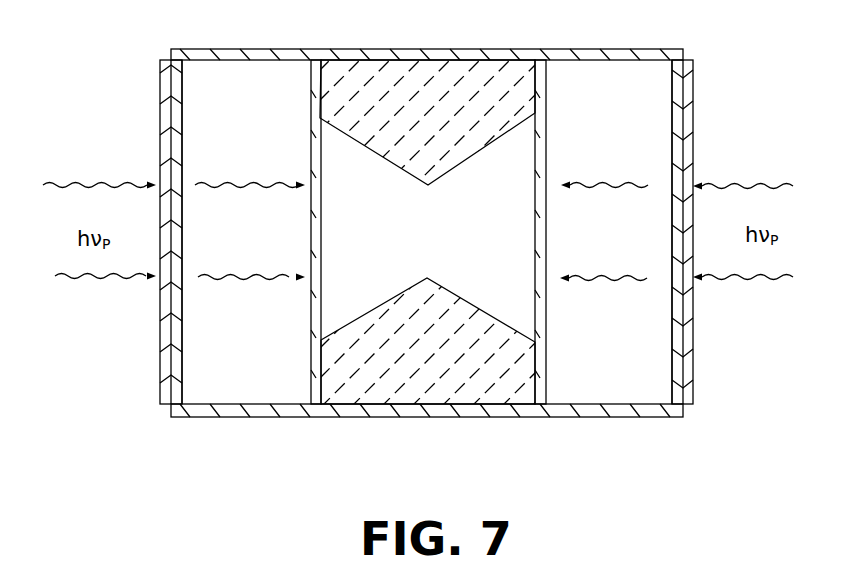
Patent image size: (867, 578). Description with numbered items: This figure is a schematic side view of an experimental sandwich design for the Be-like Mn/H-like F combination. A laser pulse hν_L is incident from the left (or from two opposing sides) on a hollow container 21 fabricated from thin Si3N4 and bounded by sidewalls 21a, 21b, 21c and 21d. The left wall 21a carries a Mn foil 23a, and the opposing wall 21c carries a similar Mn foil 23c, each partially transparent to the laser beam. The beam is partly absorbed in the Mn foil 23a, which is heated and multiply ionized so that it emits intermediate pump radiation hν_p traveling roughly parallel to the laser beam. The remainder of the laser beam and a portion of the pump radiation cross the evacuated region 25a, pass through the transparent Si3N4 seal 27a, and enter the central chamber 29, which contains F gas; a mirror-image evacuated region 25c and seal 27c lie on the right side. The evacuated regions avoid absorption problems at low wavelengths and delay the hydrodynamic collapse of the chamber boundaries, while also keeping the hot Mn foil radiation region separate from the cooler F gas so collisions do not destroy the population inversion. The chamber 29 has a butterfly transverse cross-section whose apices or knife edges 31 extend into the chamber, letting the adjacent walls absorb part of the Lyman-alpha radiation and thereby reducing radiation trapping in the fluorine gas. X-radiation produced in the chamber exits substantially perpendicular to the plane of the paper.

The hollow container 21 is at (430, 252).
The sidewall 21a is at (186, 112).
The sidewall 21b is at (450, 15).
The sidewall 21c is at (680, 107).
The sidewall 21d is at (583, 417).
The Mn foil 23a is at (160, 330).
The Mn foil 23c is at (693, 331).
The evacuated region 25a is at (283, 364).
The evacuated region 25c is at (641, 369).
The transparent seal 27a is at (310, 84).
The transparent seal 27c is at (547, 80).
The central chamber 29 is at (432, 231).
The apices or knife edges 31 is at (428, 186).